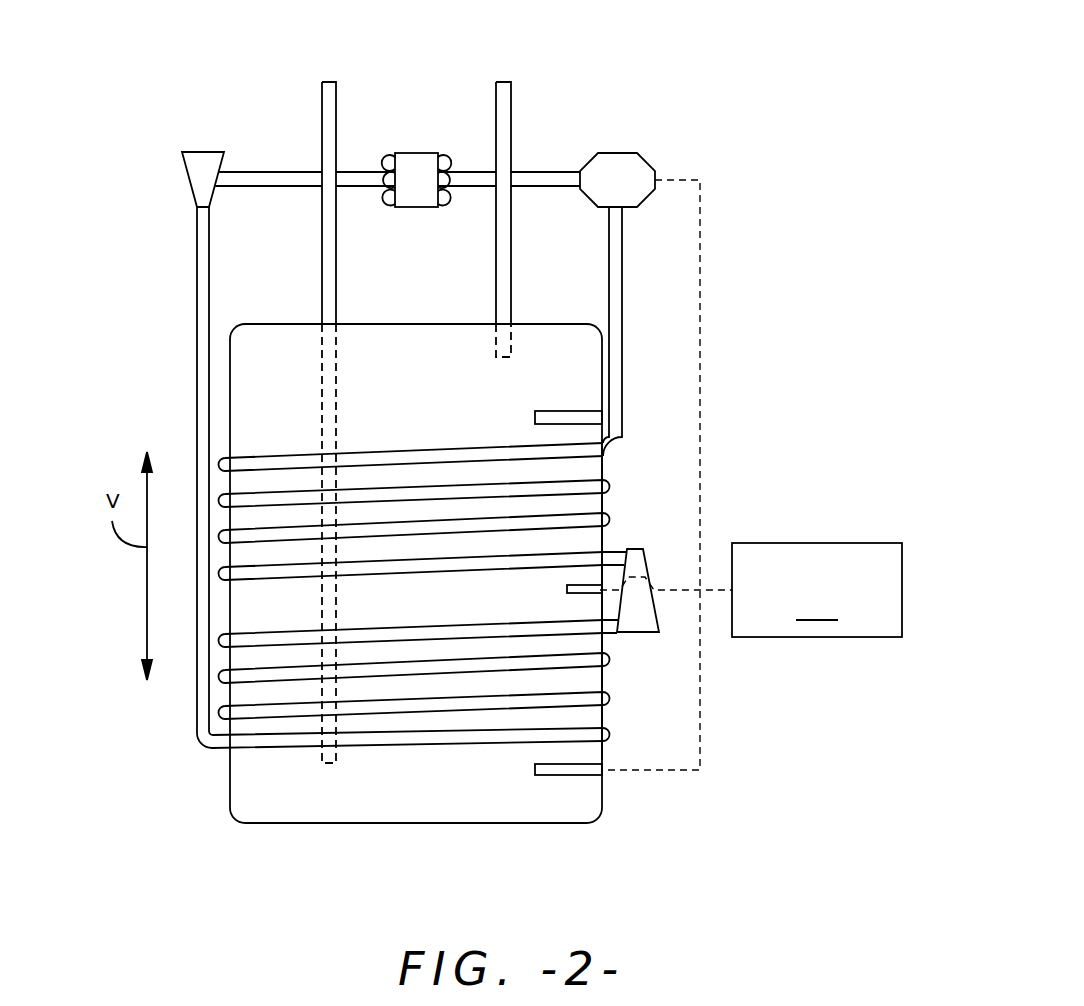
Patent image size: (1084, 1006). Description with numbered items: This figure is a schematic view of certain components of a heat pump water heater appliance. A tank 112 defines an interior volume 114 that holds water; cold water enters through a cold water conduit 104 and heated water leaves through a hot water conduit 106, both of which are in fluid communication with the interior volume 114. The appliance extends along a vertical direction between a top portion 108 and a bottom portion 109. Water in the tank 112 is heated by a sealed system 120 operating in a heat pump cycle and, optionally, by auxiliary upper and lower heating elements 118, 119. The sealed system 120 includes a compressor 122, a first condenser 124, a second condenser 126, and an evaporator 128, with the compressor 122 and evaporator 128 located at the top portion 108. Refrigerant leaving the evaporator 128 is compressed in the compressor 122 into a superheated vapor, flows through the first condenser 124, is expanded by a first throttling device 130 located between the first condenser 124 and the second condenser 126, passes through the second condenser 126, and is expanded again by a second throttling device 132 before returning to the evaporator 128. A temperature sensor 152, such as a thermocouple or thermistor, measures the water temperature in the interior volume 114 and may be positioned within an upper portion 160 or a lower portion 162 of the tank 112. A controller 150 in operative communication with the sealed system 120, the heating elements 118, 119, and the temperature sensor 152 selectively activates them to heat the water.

The cold water conduit 104 is at (322, 115).
The hot water conduit 106 is at (496, 115).
The top portion 108 is at (230, 317).
The bottom portion 109 is at (226, 829).
The tank 112 is at (612, 500).
The interior volume 114 is at (372, 353).
The upper heating element 118 is at (535, 418).
The lower heating element 119 is at (535, 770).
The sealed system 120 is at (692, 90).
The compressor 122 is at (618, 153).
The first condenser 124 is at (448, 447).
The second condenser 126 is at (431, 750).
The evaporator 128 is at (414, 152).
The first throttling device 130 is at (645, 563).
The second throttling device 132 is at (184, 176).
The controller 150 is at (752, 475).
The temperature sensor 152 is at (567, 589).
The upper portion 160 is at (229, 407).
The lower portion 162 is at (612, 746).